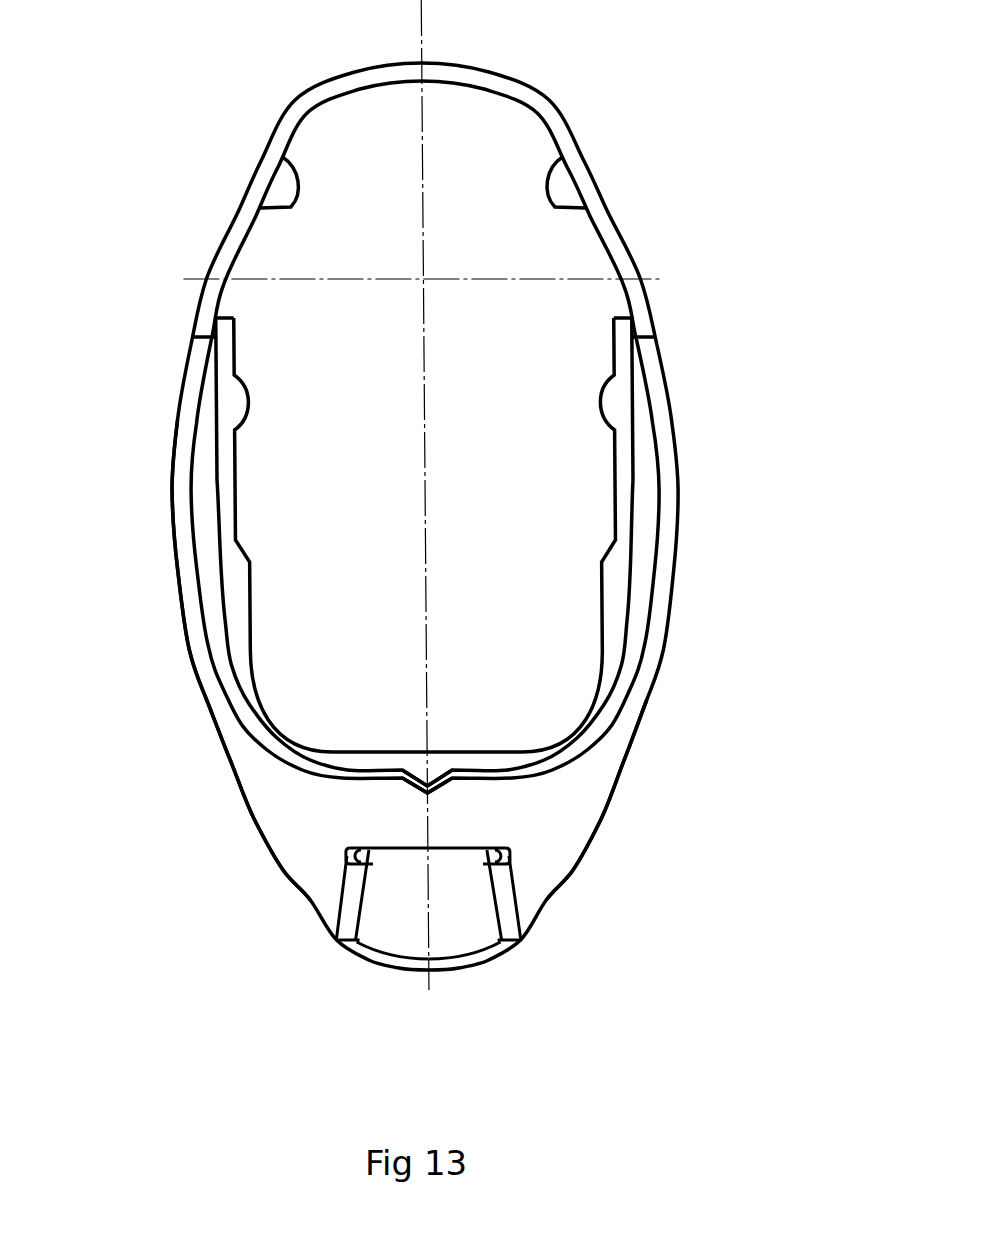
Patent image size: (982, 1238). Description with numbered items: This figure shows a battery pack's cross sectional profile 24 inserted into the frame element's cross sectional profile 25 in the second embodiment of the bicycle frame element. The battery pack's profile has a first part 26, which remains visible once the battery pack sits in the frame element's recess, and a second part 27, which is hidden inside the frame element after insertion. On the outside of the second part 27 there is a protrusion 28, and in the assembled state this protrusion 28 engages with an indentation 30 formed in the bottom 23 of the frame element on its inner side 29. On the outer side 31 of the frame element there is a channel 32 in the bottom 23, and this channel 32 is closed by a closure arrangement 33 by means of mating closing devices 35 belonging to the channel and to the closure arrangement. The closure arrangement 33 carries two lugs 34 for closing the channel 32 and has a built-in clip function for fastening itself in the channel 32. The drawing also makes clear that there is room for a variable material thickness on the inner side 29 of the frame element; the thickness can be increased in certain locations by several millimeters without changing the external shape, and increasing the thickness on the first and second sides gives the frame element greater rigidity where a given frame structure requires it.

The bottom 23 is at (268, 800).
The battery pack's cross sectional profile 24 is at (578, 140).
The frame element's cross sectional profile 25 is at (683, 482).
The first part 26 is at (603, 170).
The second part 27 is at (623, 630).
The protrusion 28 is at (430, 770).
The inner side 29 is at (198, 528).
The indentation 30 is at (437, 794).
The outer side 31 is at (170, 605).
The channel 32 is at (480, 962).
The closure arrangement 33 is at (463, 912).
The lugs 34 is at (347, 900).
The mating closing devices 35 is at (352, 853).